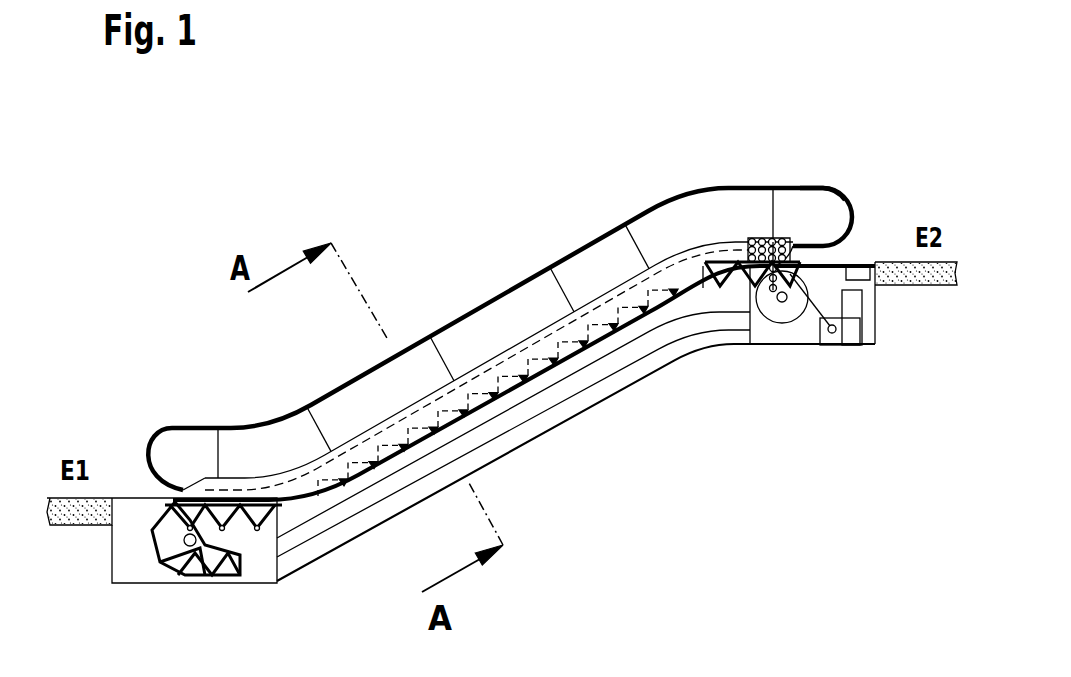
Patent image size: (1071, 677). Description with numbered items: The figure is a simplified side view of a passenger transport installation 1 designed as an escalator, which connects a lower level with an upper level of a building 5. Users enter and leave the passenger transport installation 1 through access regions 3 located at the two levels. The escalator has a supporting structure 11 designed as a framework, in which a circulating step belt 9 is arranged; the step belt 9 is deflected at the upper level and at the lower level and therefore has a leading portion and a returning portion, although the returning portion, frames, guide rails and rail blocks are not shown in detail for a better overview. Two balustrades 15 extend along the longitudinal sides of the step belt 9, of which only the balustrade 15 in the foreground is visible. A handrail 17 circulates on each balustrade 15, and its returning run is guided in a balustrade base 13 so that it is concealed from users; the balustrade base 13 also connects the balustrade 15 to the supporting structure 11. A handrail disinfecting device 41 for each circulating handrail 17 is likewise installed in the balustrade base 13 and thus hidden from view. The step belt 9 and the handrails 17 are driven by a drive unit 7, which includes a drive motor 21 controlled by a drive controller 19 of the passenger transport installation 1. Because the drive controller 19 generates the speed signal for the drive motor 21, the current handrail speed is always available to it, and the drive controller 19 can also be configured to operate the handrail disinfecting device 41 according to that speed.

The passenger transport installation 1 is at (212, 220).
The access regions 3 is at (119, 463).
The building 5 is at (73, 528).
The drive unit 7 is at (831, 338).
The step belt 9 is at (293, 486).
The supporting structure 11 is at (510, 452).
The balustrade base 13 is at (762, 224).
The balustrade 15 is at (731, 172).
The handrail 17 is at (828, 184).
The drive controller 19 is at (858, 262).
The drive motor 21 is at (853, 302).
The handrail disinfecting device 41 is at (428, 466).